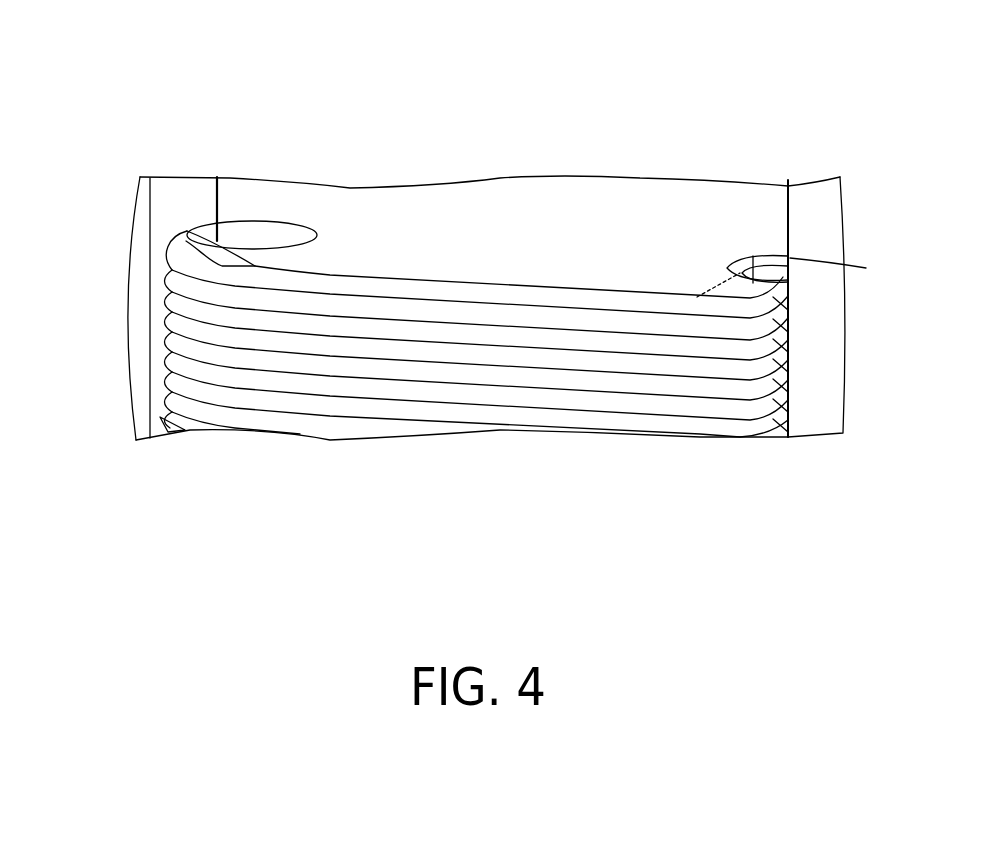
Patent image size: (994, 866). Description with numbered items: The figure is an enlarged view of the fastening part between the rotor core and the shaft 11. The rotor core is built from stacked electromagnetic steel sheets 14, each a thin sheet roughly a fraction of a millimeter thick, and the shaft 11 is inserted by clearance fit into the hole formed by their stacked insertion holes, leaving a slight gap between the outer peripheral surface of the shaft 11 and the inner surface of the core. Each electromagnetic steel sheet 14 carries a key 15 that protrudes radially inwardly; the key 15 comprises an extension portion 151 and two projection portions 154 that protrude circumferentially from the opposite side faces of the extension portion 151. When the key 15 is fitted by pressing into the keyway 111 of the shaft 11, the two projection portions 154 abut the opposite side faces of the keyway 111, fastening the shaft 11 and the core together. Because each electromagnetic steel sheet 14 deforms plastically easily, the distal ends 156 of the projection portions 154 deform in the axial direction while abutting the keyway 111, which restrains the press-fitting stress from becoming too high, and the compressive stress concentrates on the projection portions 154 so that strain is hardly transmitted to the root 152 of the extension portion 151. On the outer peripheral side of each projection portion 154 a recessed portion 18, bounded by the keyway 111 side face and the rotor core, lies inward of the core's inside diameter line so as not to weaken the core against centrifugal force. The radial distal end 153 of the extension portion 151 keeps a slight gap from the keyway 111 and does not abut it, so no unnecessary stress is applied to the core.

The shaft 11 is at (820, 403).
The electromagnetic steel sheet 14 is at (360, 207).
The key 15 is at (724, 233).
The recessed portion 18 is at (243, 215).
The keyway 111 is at (188, 432).
The extension portion 151 is at (483, 263).
The root 152 is at (535, 248).
The radial distal end 153 is at (448, 273).
The projection portion 154 is at (252, 262).
The distal end 156 is at (178, 230).